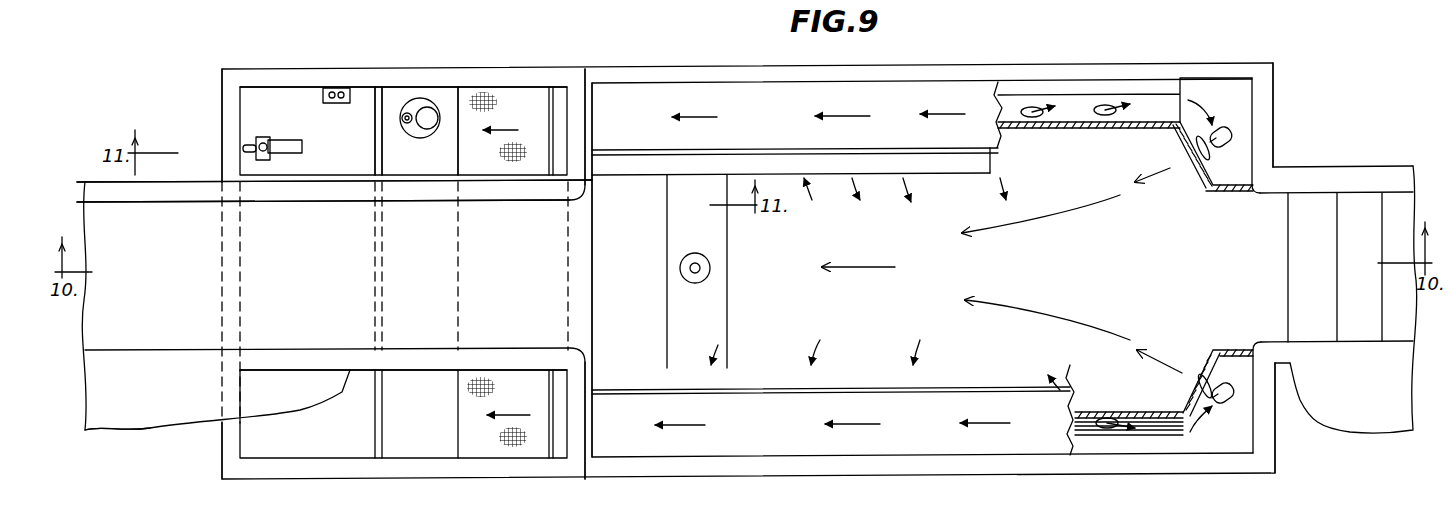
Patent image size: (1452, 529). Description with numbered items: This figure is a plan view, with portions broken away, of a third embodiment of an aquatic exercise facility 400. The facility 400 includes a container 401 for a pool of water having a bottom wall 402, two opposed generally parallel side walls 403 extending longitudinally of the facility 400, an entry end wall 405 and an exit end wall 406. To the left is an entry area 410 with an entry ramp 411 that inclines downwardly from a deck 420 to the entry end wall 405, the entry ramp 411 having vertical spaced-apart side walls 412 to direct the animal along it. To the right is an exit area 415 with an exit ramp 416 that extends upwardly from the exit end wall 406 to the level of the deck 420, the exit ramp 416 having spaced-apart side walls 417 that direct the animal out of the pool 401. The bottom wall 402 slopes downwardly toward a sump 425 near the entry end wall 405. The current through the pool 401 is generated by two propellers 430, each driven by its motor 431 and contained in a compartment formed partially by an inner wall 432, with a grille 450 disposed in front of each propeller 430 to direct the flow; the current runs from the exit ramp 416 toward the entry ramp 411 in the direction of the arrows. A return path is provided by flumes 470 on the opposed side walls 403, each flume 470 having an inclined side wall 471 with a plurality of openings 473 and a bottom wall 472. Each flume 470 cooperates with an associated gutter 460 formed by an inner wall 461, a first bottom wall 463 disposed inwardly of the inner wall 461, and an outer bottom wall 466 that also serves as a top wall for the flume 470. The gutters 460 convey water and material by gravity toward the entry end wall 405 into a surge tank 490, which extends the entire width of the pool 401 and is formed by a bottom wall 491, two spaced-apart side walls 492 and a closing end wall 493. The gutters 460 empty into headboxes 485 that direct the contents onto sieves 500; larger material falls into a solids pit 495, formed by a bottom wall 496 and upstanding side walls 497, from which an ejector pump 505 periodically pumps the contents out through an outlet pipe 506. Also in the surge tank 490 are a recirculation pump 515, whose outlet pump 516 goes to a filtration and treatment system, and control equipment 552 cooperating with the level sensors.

The aquatic exercise facility 400 is at (138, 60).
The container 401 is at (857, 170).
The bottom wall 402 is at (959, 279).
The side walls 403 is at (1118, 70).
The entry end wall 405 is at (580, 118).
The exit end wall 406 is at (1265, 112).
The entry area 410 is at (125, 340).
The entry ramp 411 is at (313, 279).
The side walls 412 is at (196, 190).
The exit area 415 is at (1306, 162).
The exit ramp 416 is at (1392, 224).
The side walls 417 is at (1355, 178).
The deck 420 is at (164, 404).
The sump 425 is at (710, 262).
The propellers 430 is at (1230, 155).
The motor 431 is at (1220, 128).
The inner wall 432 is at (1240, 192).
The grille 450 is at (1202, 178).
The gutter 460 is at (905, 95).
The inner wall 461 is at (985, 160).
The first bottom wall 463 is at (950, 172).
The outer bottom wall 466 is at (790, 114).
The flumes 470 is at (1175, 92).
The inclined side wall 471 is at (1062, 130).
The bottom wall 472 is at (1033, 106).
The openings 473 is at (1035, 113).
The headboxes 485 is at (592, 143).
The surge tank 490 is at (250, 100).
The bottom wall 491 is at (362, 424).
The side walls 492 is at (318, 78).
The closing end wall 493 is at (228, 103).
The solids pit 495 is at (462, 108).
The bottom wall 496 is at (432, 416).
The side walls 497 is at (372, 130).
The sieves 500 is at (508, 160).
The ejector pump 505 is at (421, 100).
The outlet pipe 506 is at (407, 125).
The recirculation pump 515 is at (291, 140).
The outlet pump 516 is at (263, 143).
The control equipment 552 is at (346, 86).